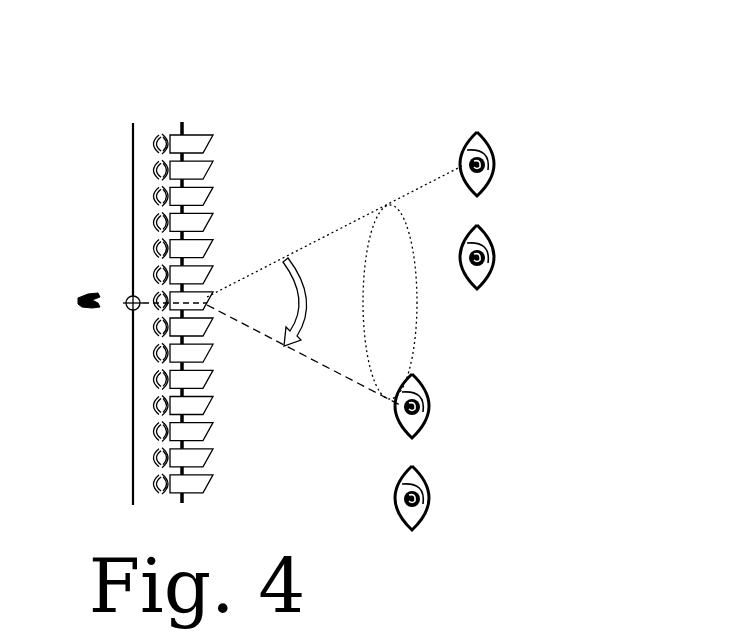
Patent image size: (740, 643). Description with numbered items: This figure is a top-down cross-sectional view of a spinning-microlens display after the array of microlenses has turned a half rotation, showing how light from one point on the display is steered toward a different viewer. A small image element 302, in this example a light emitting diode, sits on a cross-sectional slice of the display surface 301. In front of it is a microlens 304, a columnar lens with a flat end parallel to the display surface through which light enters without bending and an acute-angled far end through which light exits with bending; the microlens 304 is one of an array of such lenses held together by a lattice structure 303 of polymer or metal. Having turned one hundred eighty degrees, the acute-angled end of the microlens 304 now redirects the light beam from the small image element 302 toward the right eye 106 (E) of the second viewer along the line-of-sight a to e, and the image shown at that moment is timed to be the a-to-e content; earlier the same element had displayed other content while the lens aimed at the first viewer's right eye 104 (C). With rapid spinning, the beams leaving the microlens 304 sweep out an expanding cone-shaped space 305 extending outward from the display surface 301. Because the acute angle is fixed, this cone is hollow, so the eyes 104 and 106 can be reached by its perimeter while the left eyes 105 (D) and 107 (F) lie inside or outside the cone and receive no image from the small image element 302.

The display surface 301 is at (130, 128).
The small image element 302 is at (127, 295).
The lattice structure 303 is at (183, 122).
The microlens 304 is at (207, 290).
The expanding cone-shaped space 305 is at (417, 312).
The right eye 104 is at (495, 132).
The left eye 105 is at (500, 227).
The right eye 106 is at (435, 383).
The left eye 107 is at (438, 510).